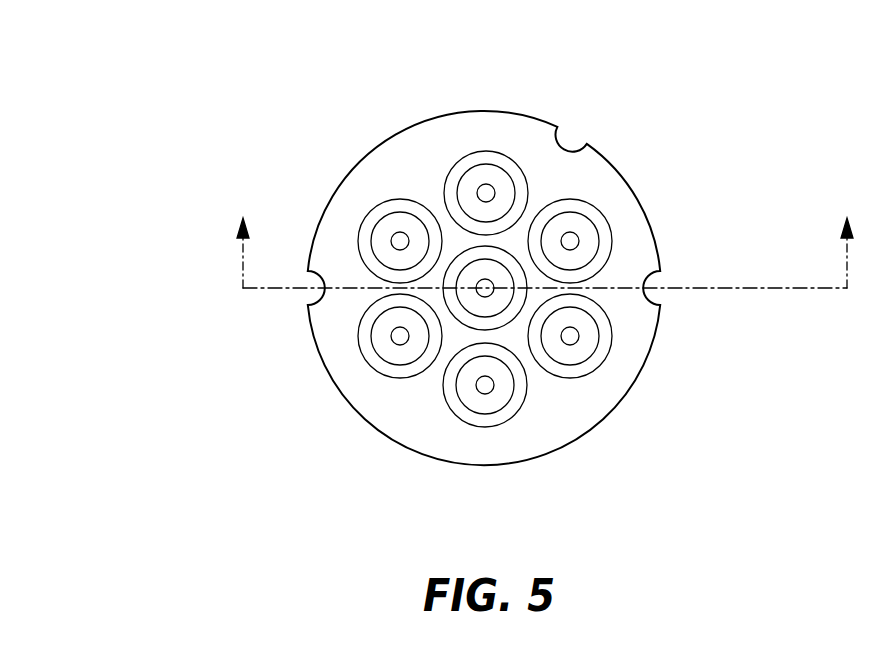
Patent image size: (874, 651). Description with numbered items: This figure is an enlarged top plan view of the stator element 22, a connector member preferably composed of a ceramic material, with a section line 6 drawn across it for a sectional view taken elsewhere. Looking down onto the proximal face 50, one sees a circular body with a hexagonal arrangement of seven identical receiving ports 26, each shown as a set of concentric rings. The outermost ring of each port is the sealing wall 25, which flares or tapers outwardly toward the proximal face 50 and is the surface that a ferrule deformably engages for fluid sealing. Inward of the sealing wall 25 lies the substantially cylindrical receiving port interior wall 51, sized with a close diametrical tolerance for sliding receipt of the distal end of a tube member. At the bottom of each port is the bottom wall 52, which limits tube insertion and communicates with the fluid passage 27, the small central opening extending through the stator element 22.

The stator element 22 is at (484, 315).
The proximal face 50 is at (562, 433).
The sealing wall 25 is at (503, 138).
The bottom wall 52 is at (490, 178).
The receiving port interior wall 51 is at (511, 188).
The fluid passage 27 is at (573, 240).
The receiving port 26 is at (385, 347).
The section line 6- 6 is at (545, 238).